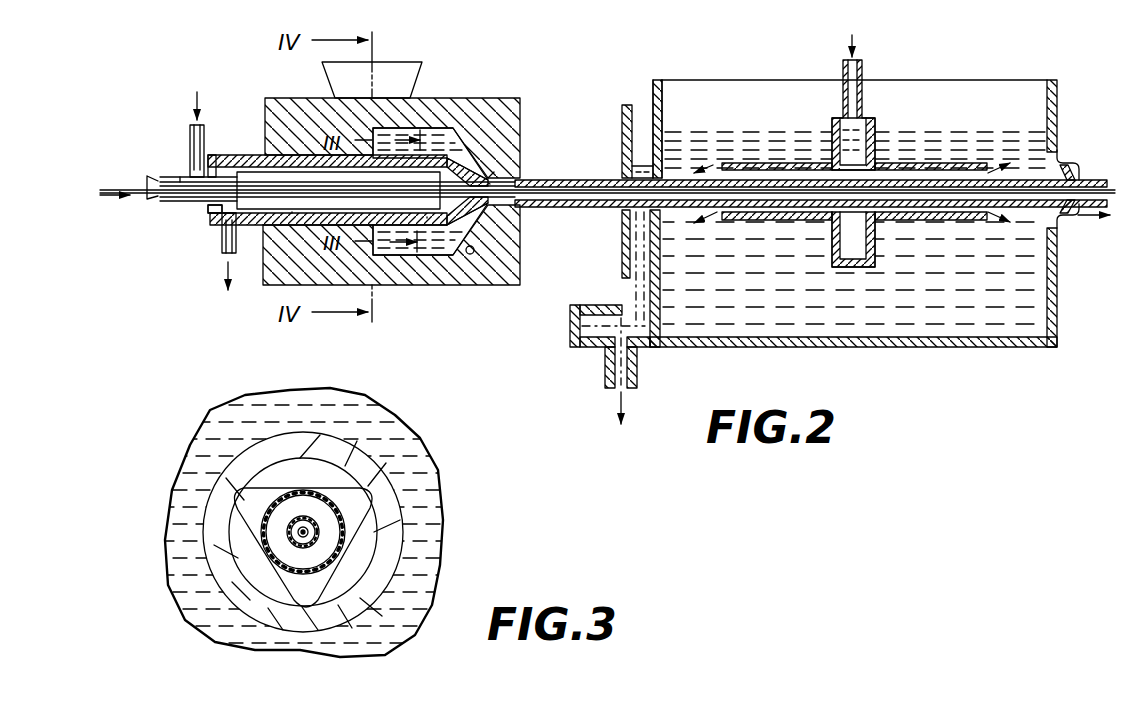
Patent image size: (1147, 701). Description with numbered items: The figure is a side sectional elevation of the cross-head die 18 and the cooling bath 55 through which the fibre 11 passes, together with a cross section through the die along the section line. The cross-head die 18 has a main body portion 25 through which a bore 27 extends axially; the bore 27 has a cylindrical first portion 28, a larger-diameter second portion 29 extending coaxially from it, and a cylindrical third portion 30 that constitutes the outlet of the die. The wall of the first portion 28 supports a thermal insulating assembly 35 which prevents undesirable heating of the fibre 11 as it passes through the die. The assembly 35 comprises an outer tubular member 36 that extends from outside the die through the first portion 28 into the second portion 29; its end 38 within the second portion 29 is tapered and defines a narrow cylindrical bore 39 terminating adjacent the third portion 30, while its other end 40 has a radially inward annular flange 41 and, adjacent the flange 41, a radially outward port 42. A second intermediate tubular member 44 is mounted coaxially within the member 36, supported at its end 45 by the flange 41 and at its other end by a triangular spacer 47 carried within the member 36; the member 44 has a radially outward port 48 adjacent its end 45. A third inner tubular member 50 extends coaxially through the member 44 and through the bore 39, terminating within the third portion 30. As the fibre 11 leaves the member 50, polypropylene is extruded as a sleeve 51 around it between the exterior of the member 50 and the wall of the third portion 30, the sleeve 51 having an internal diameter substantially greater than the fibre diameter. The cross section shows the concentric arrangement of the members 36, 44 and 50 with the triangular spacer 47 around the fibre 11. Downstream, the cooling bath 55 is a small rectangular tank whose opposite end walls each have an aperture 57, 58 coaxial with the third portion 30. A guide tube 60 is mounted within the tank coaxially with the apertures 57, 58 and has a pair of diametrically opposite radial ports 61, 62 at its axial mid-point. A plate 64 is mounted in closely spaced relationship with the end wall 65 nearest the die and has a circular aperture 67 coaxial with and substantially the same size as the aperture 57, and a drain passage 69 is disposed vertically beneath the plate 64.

In FIG. 2, the fibre 11 is at (135, 178).
In FIG. 3, the fibre 11 is at (300, 535).
In FIG. 2, the cross-head die 18 is at (465, 288).
In FIG. 2, the main body portion 25 is at (482, 112).
In FIG. 2, the bore 27 is at (471, 255).
In FIG. 2, the cylindrical first portion 28 is at (322, 212).
In FIG. 2, the second portion 29 is at (452, 128).
In FIG. 2, the cylindrical third portion 30 is at (494, 172).
In FIG. 2, the thermal insulating assembly 35 is at (243, 153).
In FIG. 2, the outer tubular member 36 is at (292, 212).
In FIG. 3, the outer tubular member 36 is at (327, 613).
In FIG. 2, the end of the tubular member 38 is at (520, 243).
In FIG. 2, the cylindrical bore 39 is at (490, 184).
In FIG. 2, the other end of the tubular member 40 is at (220, 228).
In FIG. 2, the annular flange 41 is at (212, 214).
In FIG. 2, the port 42 is at (226, 244).
In FIG. 2, the second intermediate tubular member 44 is at (286, 165).
In FIG. 3, the second intermediate tubular member 44 is at (340, 545).
In FIG. 2, the end of the second tubular member 45 is at (180, 176).
In FIG. 2, the triangular spacer 47 is at (428, 219).
In FIG. 3, the triangular spacer 47 is at (313, 583).
In FIG. 2, the port 48 is at (189, 132).
In FIG. 2, the third inner tubular member 50 is at (178, 199).
In FIG. 3, the third inner tubular member 50 is at (318, 528).
In FIG. 2, the sleeve 51 is at (540, 180).
In FIG. 2, the cooling bath 55 is at (1058, 288).
In FIG. 2, the aperture 57 is at (698, 168).
In FIG. 2, the aperture 58 is at (1068, 167).
In FIG. 2, the guide tube 60 is at (920, 222).
In FIG. 2, the port 61 is at (862, 138).
In FIG. 2, the port 62 is at (838, 218).
In FIG. 2, the plate 64 is at (622, 128).
In FIG. 2, the end wall 65 is at (660, 100).
In FIG. 2, the circular aperture 67 is at (628, 211).
In FIG. 2, the drain passage 69 is at (610, 372).